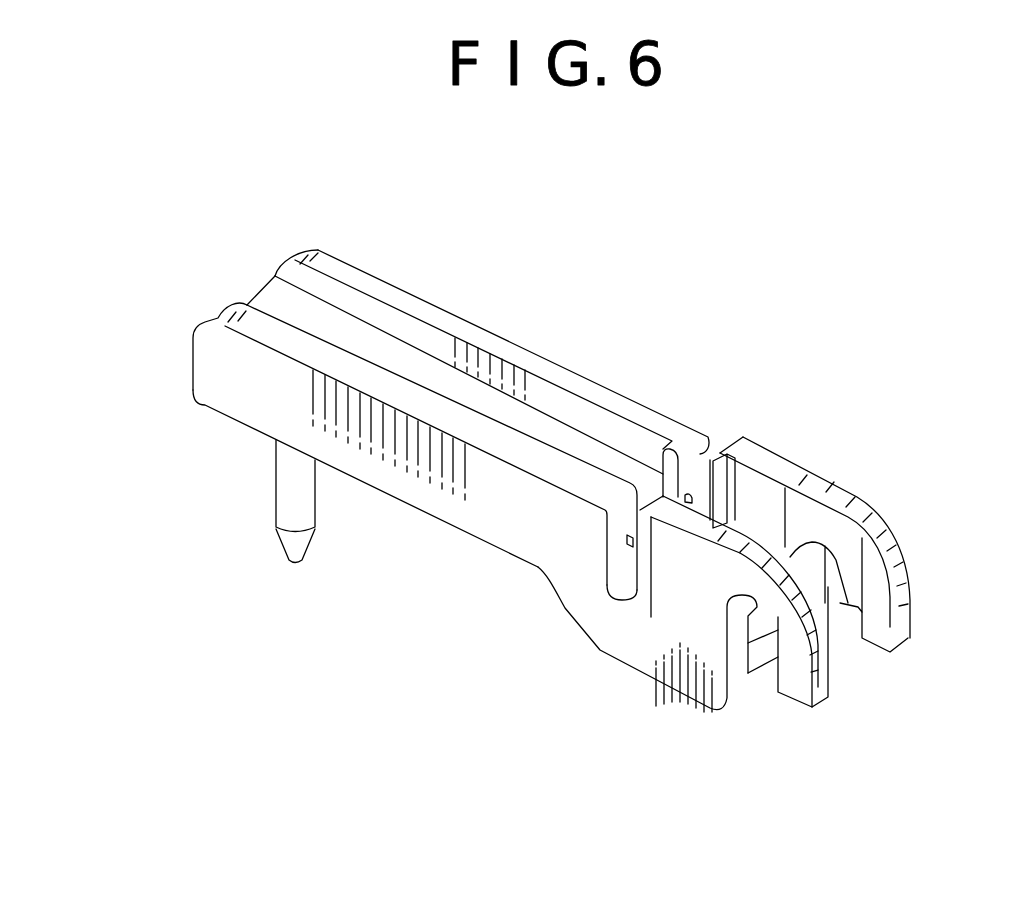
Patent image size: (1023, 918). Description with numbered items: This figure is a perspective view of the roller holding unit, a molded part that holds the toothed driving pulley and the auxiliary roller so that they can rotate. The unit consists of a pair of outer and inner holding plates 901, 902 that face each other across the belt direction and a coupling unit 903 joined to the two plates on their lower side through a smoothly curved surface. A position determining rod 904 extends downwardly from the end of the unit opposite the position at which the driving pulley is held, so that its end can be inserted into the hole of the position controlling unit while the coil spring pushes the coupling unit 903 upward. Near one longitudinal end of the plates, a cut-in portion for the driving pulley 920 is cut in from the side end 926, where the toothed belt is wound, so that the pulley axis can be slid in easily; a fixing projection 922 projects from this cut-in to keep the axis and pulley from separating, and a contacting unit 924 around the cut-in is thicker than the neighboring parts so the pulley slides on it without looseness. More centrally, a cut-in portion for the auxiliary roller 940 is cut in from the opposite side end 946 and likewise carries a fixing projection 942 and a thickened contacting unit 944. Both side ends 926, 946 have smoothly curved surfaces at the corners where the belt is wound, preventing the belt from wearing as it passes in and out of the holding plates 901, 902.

The outer holding plate 901 is at (235, 398).
The inner holding plate 902 is at (352, 275).
The coupling unit 903 is at (277, 303).
The position determining rod 904 is at (290, 495).
The cut-in portion for the driving pulley 920 is at (738, 680).
The fixing projection 922 is at (838, 560).
The contacting unit 924 is at (797, 510).
The side end 926 is at (832, 693).
The cut-in portion for the auxiliary roller 940 is at (620, 527).
The fixing projection 942 is at (693, 487).
The contacting unit 944 is at (653, 497).
The side end 946 is at (745, 450).